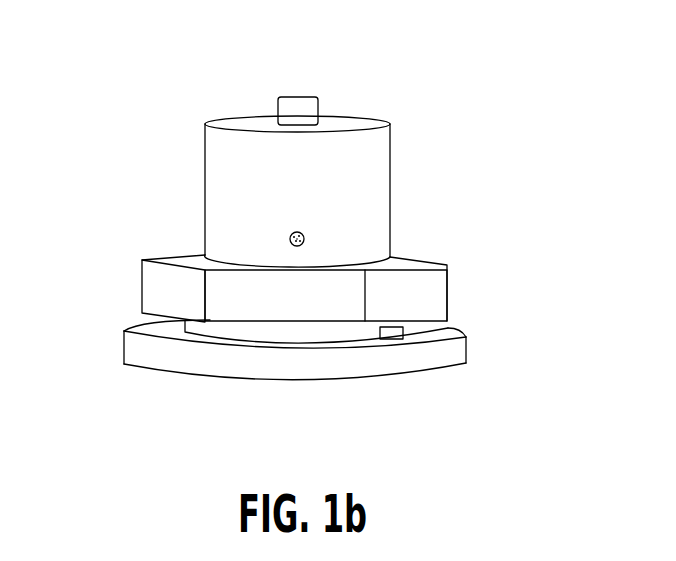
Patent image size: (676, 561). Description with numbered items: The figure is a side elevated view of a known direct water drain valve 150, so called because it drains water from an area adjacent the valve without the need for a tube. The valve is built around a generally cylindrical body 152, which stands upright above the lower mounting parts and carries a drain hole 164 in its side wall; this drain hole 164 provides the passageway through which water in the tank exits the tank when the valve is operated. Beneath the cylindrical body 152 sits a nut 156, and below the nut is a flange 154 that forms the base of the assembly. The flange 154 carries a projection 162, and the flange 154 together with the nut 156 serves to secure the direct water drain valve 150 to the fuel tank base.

The direct water drain valve 150 is at (446, 95).
The generally cylindrical body 152 is at (390, 191).
The flange 154 is at (124, 351).
The nut 156 is at (448, 292).
The projection 162 is at (404, 329).
The drain hole 164 is at (290, 238).